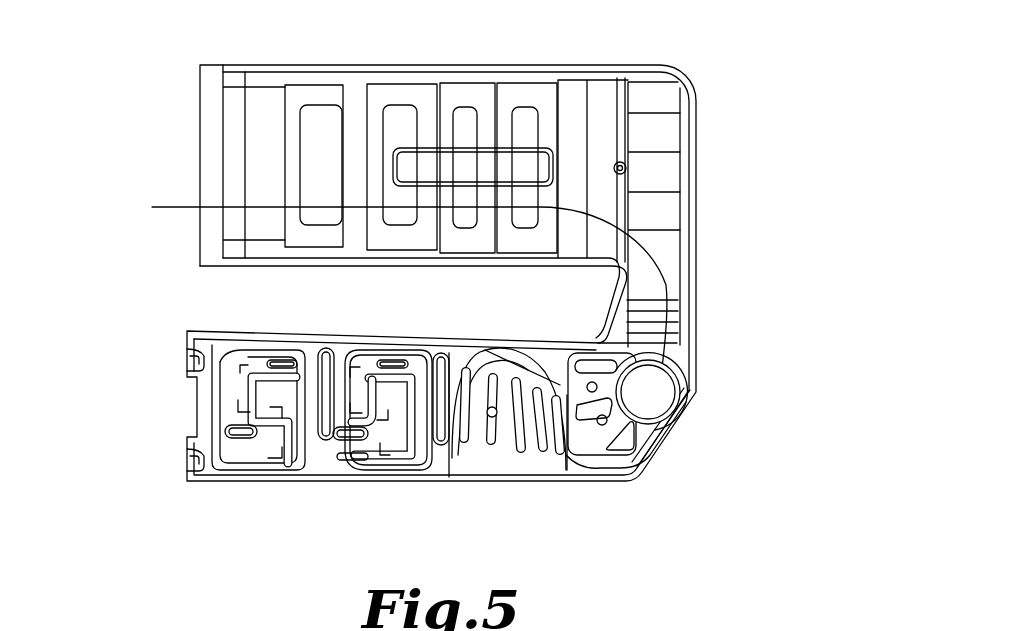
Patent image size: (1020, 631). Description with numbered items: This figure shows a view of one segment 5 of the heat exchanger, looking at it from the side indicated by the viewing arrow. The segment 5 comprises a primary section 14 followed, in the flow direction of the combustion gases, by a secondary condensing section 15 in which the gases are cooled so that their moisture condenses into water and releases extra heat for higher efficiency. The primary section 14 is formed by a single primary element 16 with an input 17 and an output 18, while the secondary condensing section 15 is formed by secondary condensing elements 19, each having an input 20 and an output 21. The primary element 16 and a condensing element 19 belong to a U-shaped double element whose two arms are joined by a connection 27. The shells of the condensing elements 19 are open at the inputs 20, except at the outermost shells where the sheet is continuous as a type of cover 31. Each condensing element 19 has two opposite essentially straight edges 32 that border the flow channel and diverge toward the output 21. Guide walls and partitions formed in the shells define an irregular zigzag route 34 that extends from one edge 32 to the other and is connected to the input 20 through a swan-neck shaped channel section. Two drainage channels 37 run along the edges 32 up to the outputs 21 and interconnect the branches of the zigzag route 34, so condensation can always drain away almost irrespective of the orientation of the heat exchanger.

The segment 5 is at (700, 42).
The primary section 14 is at (740, 207).
The secondary condensing section 15 is at (742, 425).
The primary element 16 is at (667, 125).
The input 17 is at (198, 145).
The output 18 is at (724, 358).
The secondary condensing element 19 is at (270, 483).
The input 20 is at (718, 394).
The output 21 is at (176, 359).
The connection 27 is at (670, 263).
The cover 31 is at (667, 397).
The straight edges 32 is at (383, 340).
The zigzag route 34 is at (638, 473).
The drainage channels 37 is at (497, 347).